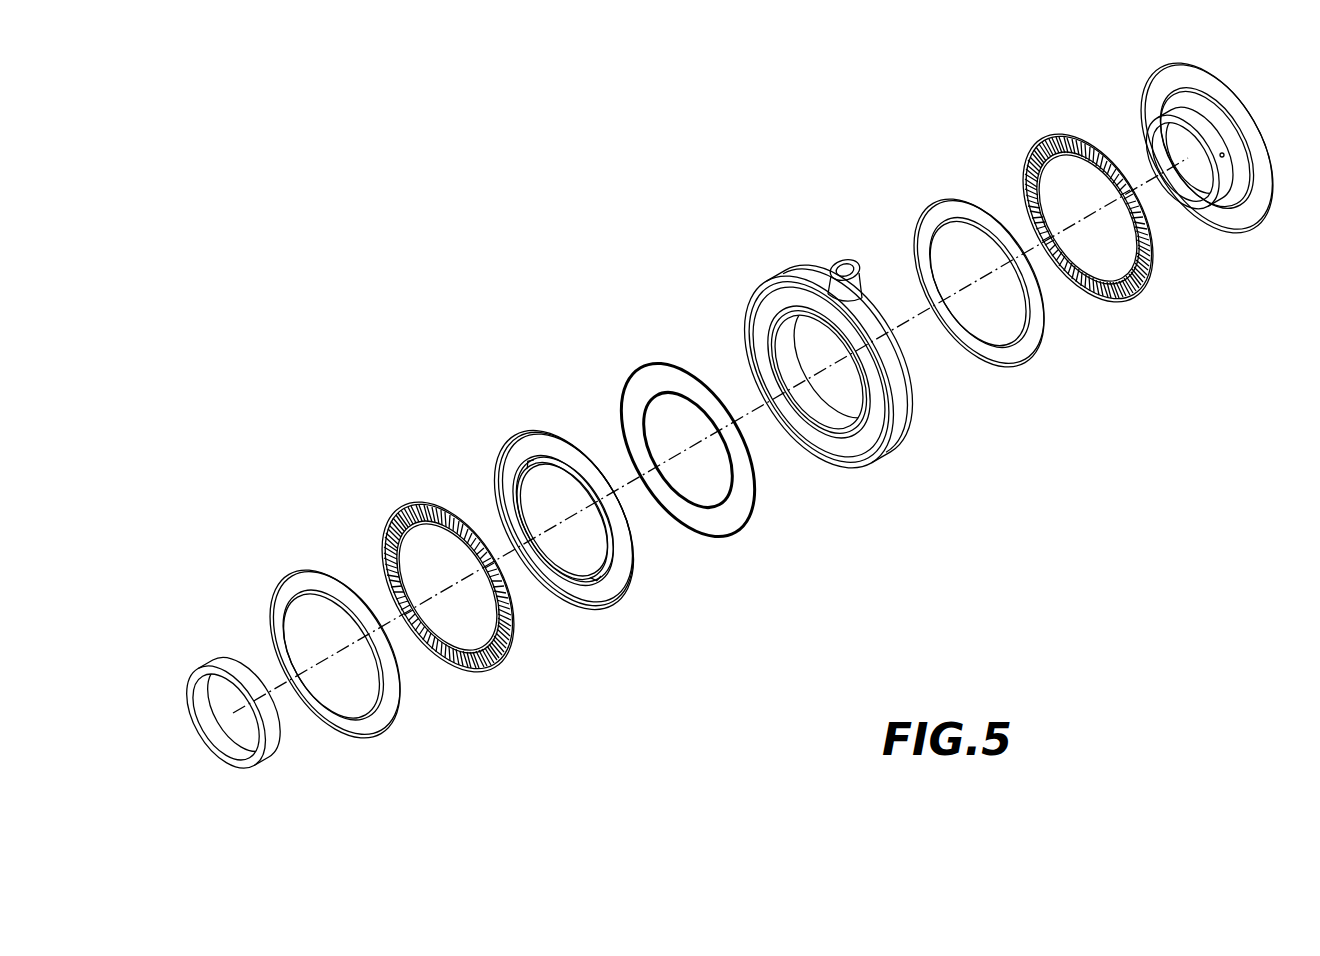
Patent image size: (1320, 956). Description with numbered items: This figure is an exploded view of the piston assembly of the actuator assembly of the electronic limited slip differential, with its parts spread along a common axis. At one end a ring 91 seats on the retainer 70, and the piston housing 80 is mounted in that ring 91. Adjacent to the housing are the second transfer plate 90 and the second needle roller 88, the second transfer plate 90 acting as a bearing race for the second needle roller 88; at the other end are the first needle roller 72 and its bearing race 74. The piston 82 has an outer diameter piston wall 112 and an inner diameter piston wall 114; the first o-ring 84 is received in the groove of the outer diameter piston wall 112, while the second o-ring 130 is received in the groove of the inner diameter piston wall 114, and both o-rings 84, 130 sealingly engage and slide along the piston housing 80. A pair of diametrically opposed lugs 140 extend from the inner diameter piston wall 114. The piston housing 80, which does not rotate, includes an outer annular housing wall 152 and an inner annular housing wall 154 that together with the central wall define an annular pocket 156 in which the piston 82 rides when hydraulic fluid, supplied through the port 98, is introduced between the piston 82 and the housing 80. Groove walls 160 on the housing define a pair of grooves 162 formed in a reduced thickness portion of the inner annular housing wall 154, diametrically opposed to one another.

The retainer 70 is at (1166, 76).
The first needle roller 72 is at (1044, 144).
The bearing race 74 is at (937, 205).
The piston housing 80 is at (830, 358).
The piston 82 is at (582, 516).
The o-ring 84 is at (674, 442).
The second needle roller 88 is at (399, 517).
The second transfer plate 90 is at (290, 590).
The ring 91 is at (228, 666).
The port 98 is at (847, 258).
The outer diameter piston wall 112 is at (625, 583).
The inner diameter piston wall 114 is at (610, 537).
The second o-ring 130 is at (646, 410).
The lugs 140 is at (550, 470).
The outer annular housing wall 152 is at (905, 437).
The inner annular housing wall 154 is at (833, 422).
The annular pocket 156 is at (784, 309).
The groove walls 160 is at (803, 337).
The grooves 162 is at (817, 326).